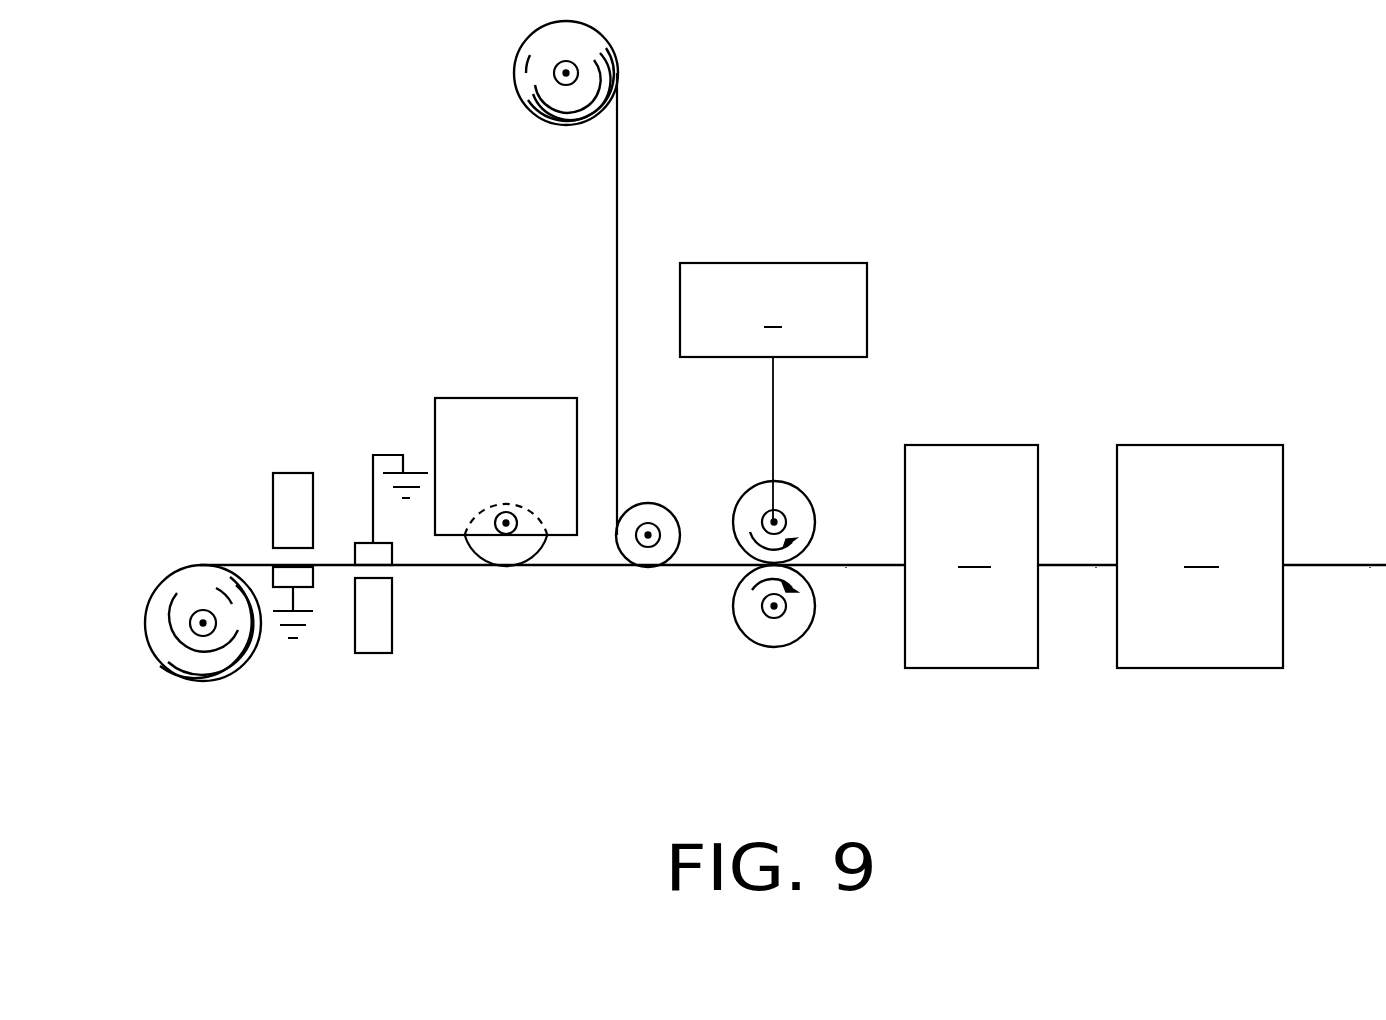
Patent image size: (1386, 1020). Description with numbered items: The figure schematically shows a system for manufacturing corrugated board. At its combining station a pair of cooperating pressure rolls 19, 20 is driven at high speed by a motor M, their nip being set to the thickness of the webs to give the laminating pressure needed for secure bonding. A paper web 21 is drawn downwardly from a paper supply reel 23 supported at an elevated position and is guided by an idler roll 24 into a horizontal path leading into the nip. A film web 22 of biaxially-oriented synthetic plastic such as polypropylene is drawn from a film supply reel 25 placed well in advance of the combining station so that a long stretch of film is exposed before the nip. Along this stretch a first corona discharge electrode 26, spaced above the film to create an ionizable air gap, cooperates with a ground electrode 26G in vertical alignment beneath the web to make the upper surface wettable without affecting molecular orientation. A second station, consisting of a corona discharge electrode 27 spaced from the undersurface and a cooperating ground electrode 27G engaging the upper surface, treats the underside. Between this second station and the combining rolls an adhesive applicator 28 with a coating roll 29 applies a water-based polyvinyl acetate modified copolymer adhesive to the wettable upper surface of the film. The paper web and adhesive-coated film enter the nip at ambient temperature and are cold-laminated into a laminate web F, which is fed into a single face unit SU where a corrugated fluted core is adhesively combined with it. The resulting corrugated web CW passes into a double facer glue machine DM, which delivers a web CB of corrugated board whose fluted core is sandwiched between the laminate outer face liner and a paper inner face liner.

The pressure roll 19 is at (806, 492).
The pressure roll 20 is at (758, 628).
The paper web 21 is at (617, 232).
The film web 22 is at (599, 567).
The paper supply reel 23 is at (513, 65).
The idler roll 24 is at (665, 504).
The film supply reel 25 is at (190, 678).
The first corona discharge electrode 26 is at (273, 510).
The ground electrode 26G is at (318, 577).
The corona discharge electrode 27 is at (392, 632).
The ground electrode 27G is at (357, 543).
The adhesive applicator 28 is at (521, 457).
The coating roll 29 is at (508, 560).
The laminate web F is at (846, 567).
The corrugated web CW is at (1096, 567).
The web of corrugated board CB is at (1370, 567).
The motor M is at (773, 392).
The single face unit SU is at (971, 556).
The double facer glue machine DM is at (1200, 556).